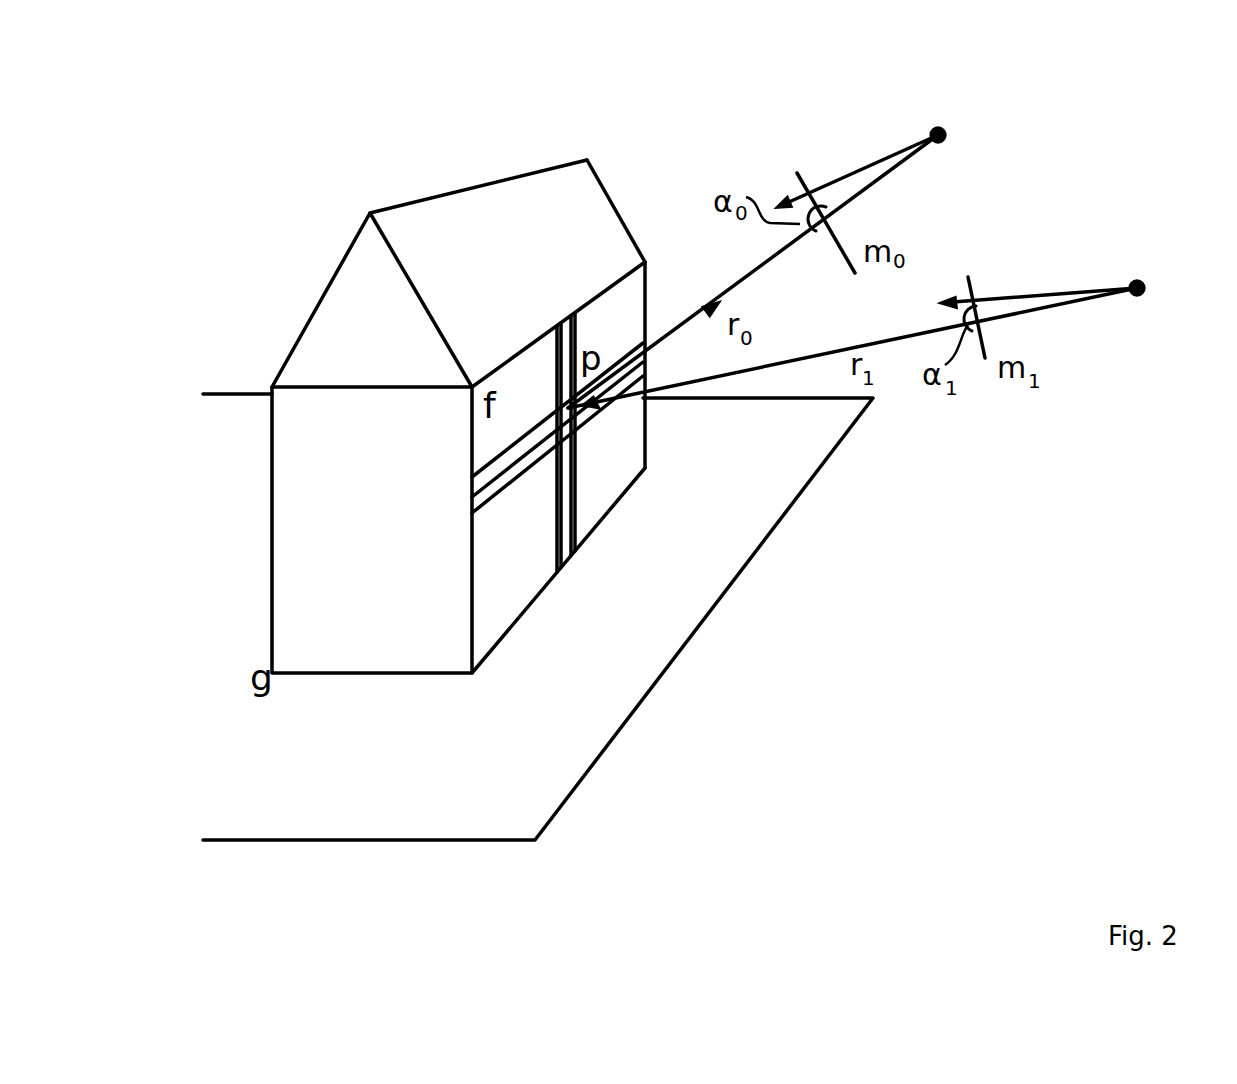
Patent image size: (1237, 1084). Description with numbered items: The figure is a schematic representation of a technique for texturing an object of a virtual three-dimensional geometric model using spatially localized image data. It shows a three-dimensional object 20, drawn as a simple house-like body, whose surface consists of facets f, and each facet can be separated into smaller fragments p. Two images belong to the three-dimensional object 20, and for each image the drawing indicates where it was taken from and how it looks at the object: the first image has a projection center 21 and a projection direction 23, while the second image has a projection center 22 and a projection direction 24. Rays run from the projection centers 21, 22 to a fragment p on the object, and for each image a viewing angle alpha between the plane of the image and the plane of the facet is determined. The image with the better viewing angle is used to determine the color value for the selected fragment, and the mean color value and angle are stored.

The 3D object 20 is at (462, 243).
The projection center 21 is at (948, 137).
The projection center 22 is at (1140, 297).
The projection direction 23 is at (843, 178).
The projection direction 24 is at (1027, 296).